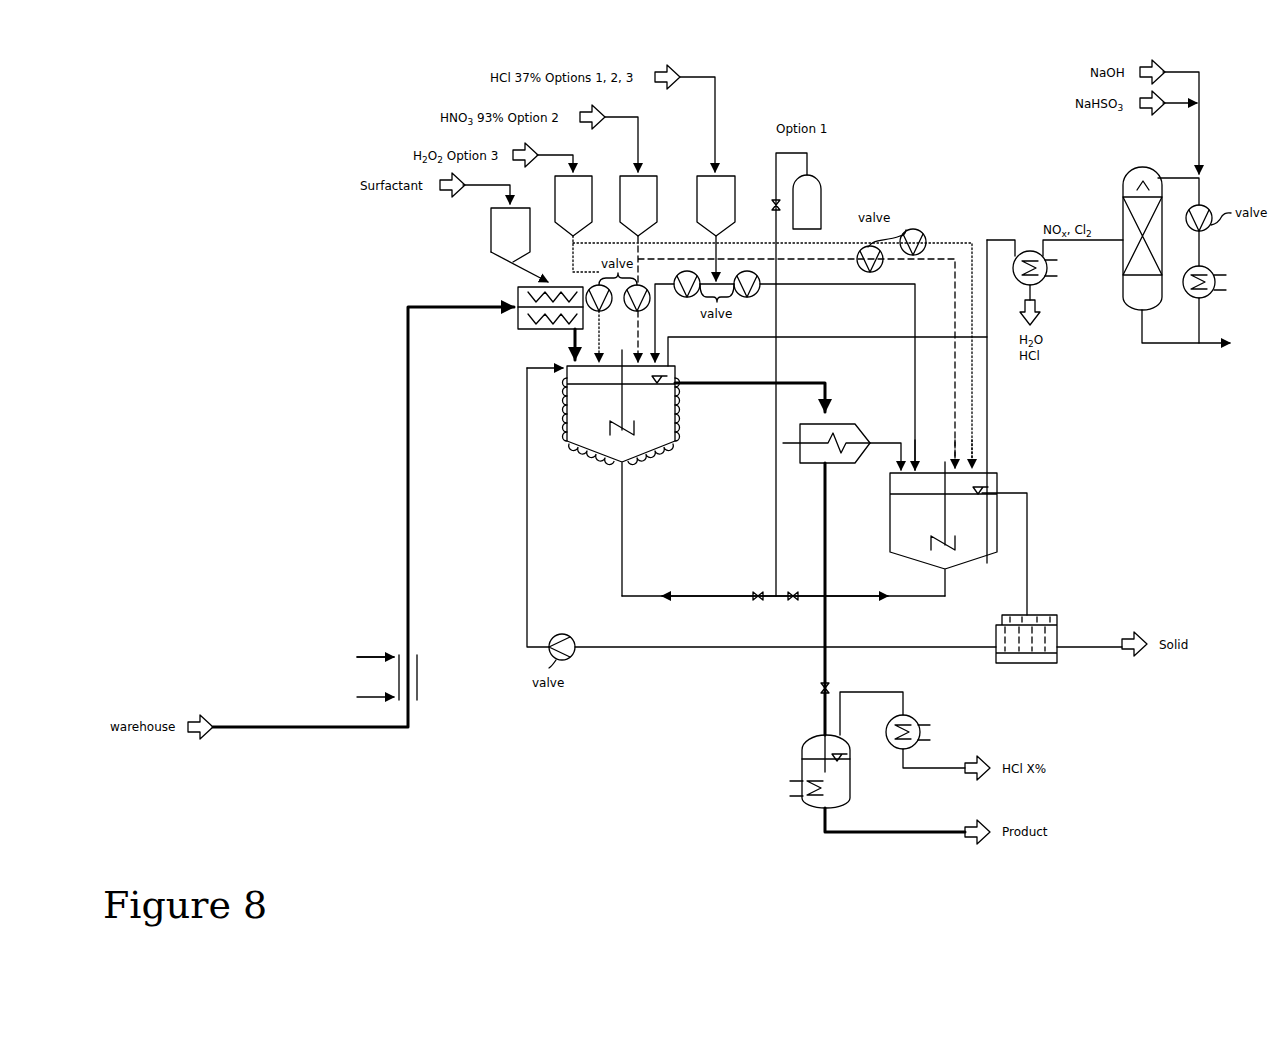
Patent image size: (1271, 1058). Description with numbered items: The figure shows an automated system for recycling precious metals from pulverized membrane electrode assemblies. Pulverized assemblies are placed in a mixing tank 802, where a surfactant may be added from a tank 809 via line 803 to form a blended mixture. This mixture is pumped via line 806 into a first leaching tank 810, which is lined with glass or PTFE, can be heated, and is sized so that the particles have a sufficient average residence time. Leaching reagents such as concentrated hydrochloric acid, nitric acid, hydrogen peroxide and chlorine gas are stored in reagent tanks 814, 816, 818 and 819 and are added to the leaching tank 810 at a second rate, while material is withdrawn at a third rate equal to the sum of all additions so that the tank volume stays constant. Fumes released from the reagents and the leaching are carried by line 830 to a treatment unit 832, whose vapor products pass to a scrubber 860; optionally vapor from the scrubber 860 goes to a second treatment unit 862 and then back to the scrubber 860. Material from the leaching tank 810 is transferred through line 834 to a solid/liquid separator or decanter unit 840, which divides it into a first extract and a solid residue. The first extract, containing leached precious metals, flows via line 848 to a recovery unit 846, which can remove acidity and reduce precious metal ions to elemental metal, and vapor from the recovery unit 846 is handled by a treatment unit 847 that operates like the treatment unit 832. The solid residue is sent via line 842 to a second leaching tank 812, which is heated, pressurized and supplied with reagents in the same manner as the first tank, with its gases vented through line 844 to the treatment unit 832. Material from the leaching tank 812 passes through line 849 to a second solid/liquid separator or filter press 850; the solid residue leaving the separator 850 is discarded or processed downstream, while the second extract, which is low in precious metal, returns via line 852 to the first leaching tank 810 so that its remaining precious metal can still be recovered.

The mixing tank 802 is at (518, 286).
The line 803 is at (521, 267).
The line 806 is at (563, 344).
The tank 809 is at (510, 235).
The leaching tank 810 is at (680, 414).
The leaching tank 812 is at (890, 522).
The reagent tank 814 is at (573, 206).
The reagent tank 816 is at (638, 206).
The reagent tank 818 is at (716, 206).
The reagent tank 819 is at (822, 207).
The line 830 is at (827, 343).
The treatment unit 832 is at (1028, 252).
The line 834 is at (750, 388).
The solid/liquid separator 840 is at (800, 452).
The line 842 is at (885, 449).
The line 844 is at (996, 401).
The recovery unit 846 is at (800, 772).
The treatment unit 847 is at (905, 710).
The line 848 is at (814, 599).
The line 849 is at (1004, 554).
The solid/liquid separator 850 is at (1035, 612).
The line 852 is at (848, 635).
The scrubber 860 is at (1118, 200).
The treatment unit 862 is at (1210, 266).